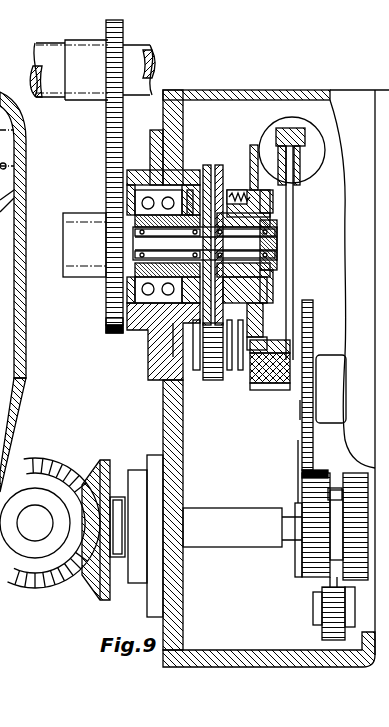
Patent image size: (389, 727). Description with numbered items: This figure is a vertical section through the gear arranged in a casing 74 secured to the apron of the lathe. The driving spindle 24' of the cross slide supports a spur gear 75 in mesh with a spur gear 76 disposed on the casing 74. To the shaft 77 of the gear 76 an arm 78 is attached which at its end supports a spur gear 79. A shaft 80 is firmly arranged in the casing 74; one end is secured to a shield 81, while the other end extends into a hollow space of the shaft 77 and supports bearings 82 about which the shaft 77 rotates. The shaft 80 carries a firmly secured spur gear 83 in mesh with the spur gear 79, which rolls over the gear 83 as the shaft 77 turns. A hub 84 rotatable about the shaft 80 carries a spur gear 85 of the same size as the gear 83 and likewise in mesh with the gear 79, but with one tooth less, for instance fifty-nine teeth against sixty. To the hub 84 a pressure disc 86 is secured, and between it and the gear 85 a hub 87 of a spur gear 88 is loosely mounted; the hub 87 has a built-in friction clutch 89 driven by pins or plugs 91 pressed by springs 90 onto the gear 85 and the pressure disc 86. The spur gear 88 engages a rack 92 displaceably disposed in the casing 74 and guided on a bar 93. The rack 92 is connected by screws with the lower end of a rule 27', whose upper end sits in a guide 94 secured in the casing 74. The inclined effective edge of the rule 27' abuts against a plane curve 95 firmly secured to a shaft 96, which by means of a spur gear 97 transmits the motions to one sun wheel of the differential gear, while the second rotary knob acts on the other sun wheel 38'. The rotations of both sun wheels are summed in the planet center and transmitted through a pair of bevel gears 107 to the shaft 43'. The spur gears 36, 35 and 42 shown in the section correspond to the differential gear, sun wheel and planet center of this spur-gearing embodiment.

The driving spindle 24' is at (112, 70).
The casing 74 is at (290, 90).
The spur gear 75 is at (106, 128).
The spur gear 76 is at (106, 183).
The shaft 77 is at (80, 251).
The shaft 80 is at (135, 253).
The bearings 82 is at (113, 333).
The arm 78 is at (140, 320).
The spur gear 88 is at (251, 147).
The spur gear 83 is at (207, 168).
The spur gear 85 is at (221, 168).
The springs 90 is at (238, 195).
The guide 94 is at (302, 152).
The pressure disc 86 is at (272, 195).
The friction clutch 89 is at (268, 205).
The pins or plugs 91 is at (266, 222).
The shield 81 is at (280, 232).
The hub 84 is at (272, 270).
The hub 87 is at (265, 290).
The rule 27' is at (313, 253).
The spur gear 97 is at (313, 328).
The spur gear 79 is at (211, 380).
The rack 92 is at (252, 388).
The bar 93 is at (272, 390).
The shaft 96 is at (300, 415).
The plane curve 95 is at (298, 455).
The gear 36 is at (326, 527).
The sun wheel 38' is at (356, 506).
The shaft 35 is at (320, 572).
The gear 42 is at (328, 585).
The shaft 43' is at (50, 510).
The pair of bevel gears 107 is at (88, 585).